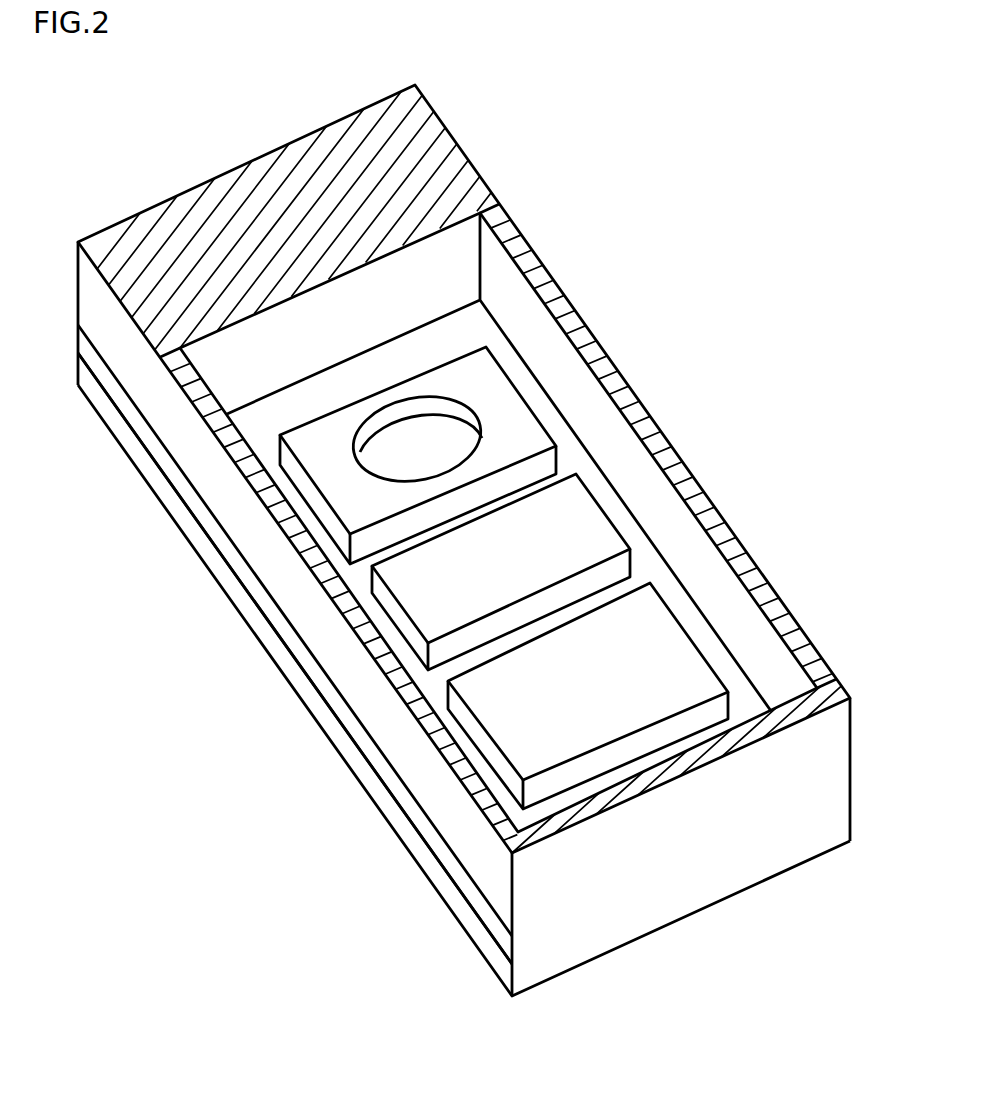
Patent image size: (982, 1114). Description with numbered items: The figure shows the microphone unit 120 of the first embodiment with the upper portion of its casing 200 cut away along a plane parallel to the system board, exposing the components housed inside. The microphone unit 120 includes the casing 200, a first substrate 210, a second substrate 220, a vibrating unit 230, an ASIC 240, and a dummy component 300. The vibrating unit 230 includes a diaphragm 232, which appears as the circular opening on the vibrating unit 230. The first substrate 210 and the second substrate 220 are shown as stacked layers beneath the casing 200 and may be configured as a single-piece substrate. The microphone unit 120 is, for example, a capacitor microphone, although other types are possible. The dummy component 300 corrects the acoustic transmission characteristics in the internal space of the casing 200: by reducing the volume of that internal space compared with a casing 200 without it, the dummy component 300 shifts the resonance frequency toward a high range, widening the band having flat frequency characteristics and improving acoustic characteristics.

The microphone unit 120 is at (243, 137).
The casing 200 is at (455, 172).
The first substrate 210 is at (217, 535).
The second substrate 220 is at (238, 588).
The vibrating unit 230 is at (497, 405).
The diaphragm 232 is at (405, 452).
The ASIC 240 is at (590, 518).
The dummy component 300 is at (668, 645).